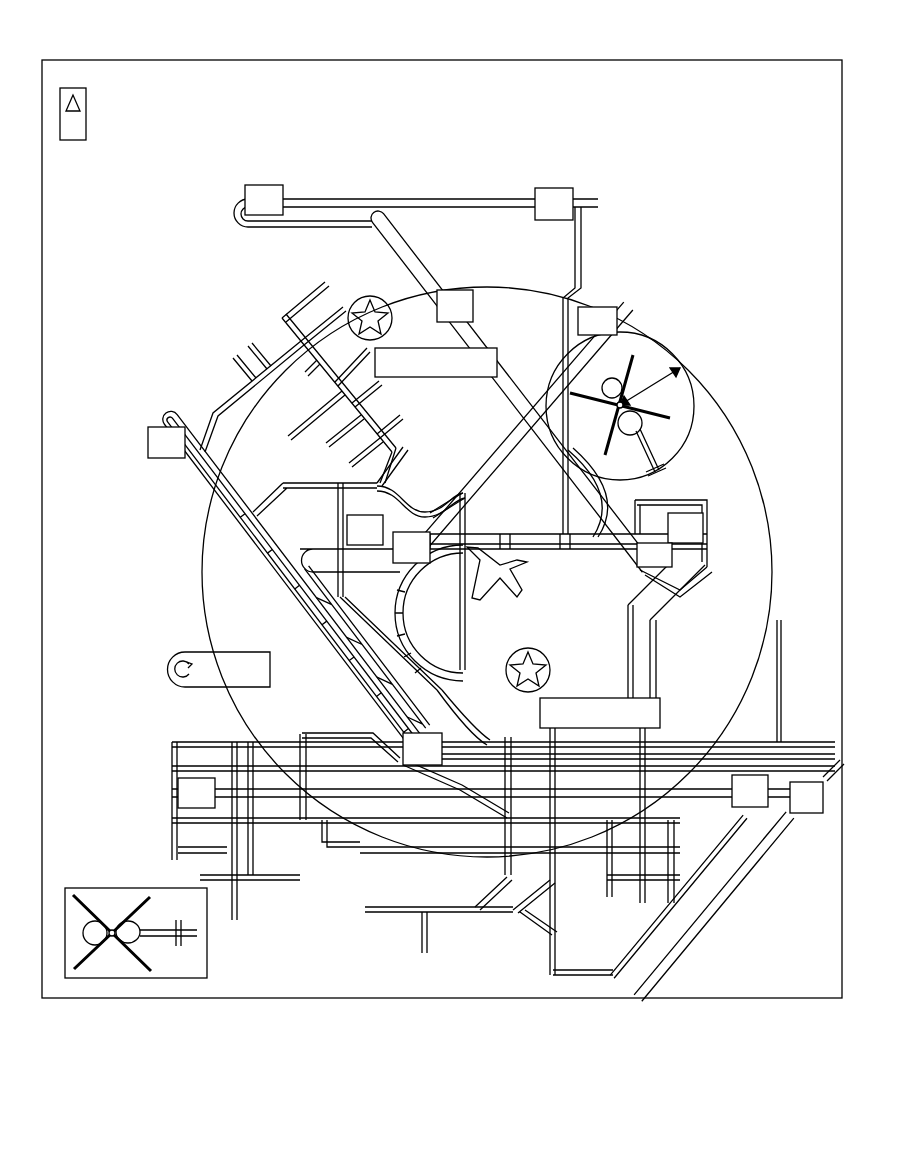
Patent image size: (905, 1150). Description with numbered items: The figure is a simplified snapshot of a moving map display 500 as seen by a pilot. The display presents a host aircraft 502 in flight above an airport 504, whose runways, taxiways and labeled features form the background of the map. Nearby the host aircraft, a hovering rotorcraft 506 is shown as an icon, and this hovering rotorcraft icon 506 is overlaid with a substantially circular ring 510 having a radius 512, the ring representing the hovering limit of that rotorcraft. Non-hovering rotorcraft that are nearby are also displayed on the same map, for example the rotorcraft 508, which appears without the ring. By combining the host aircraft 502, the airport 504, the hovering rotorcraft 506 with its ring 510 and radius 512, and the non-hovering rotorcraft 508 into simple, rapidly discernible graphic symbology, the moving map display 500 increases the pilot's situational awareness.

The moving map display 500 is at (412, 60).
The host aircraft 502 is at (510, 600).
The airport 504 is at (780, 932).
The hovering rotorcraft 506 is at (647, 424).
The rotorcraft 508 is at (120, 900).
The substantially circular ring 510 is at (684, 362).
The radius 512 is at (665, 390).